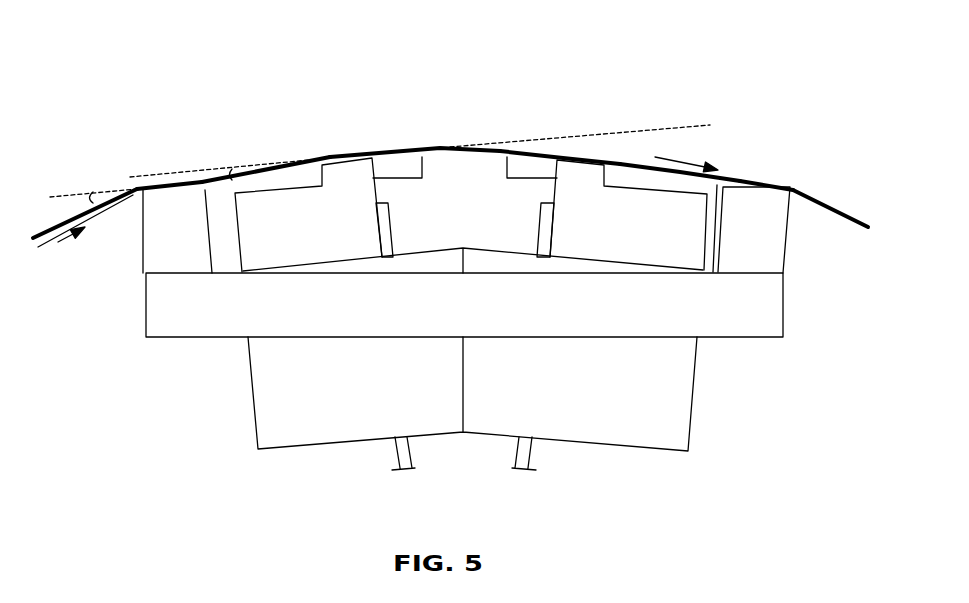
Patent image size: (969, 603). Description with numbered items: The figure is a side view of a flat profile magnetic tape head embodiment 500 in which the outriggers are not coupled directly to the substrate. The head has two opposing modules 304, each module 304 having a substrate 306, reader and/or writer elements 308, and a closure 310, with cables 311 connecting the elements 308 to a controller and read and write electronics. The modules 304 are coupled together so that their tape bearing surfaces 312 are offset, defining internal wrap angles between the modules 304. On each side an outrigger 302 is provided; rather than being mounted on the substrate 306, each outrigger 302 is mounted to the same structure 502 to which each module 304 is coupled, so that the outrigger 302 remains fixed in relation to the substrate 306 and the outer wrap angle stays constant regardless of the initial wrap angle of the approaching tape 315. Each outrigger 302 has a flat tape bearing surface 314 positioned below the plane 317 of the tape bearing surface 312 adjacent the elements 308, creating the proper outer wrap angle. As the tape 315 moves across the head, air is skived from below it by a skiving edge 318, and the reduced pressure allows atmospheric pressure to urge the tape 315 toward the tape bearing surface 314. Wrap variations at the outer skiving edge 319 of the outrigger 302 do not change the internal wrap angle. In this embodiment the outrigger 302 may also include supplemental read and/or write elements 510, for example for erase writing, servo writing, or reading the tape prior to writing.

The embodiment 500 is at (243, 110).
The outrigger 302 is at (776, 153).
The module 304 is at (698, 340).
The substrate 306 is at (236, 233).
The elements 308 is at (370, 140).
The closure 310 is at (508, 167).
The cables 311 is at (389, 213).
The tape bearing surface 312 is at (586, 143).
The tape bearing surface 314 is at (784, 172).
The tape 315 is at (838, 211).
The plane 317 is at (509, 131).
The skiving edge 318 is at (124, 209).
The outer (skiving) edge 319 is at (99, 190).
The structure 502 is at (146, 312).
The supplemental read and/or write elements 510 is at (211, 159).